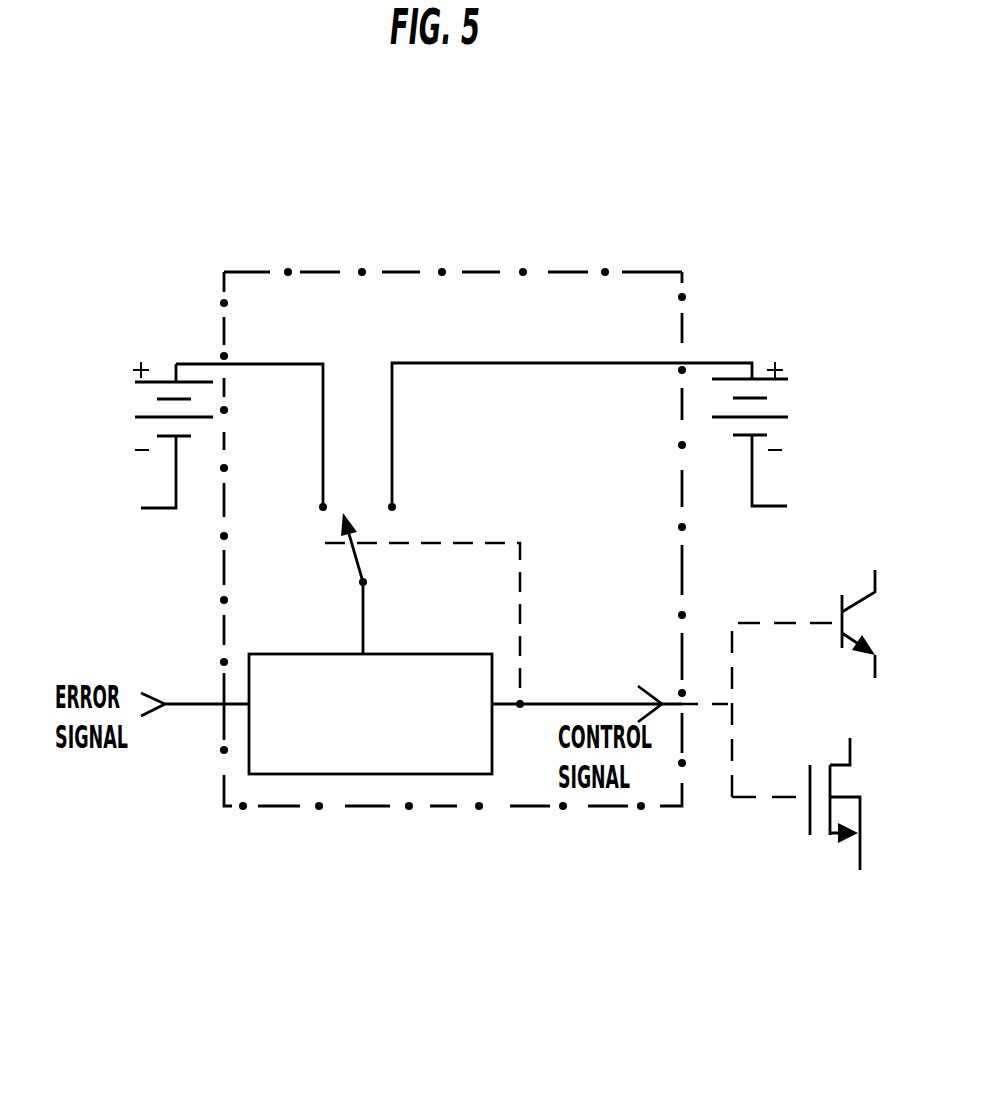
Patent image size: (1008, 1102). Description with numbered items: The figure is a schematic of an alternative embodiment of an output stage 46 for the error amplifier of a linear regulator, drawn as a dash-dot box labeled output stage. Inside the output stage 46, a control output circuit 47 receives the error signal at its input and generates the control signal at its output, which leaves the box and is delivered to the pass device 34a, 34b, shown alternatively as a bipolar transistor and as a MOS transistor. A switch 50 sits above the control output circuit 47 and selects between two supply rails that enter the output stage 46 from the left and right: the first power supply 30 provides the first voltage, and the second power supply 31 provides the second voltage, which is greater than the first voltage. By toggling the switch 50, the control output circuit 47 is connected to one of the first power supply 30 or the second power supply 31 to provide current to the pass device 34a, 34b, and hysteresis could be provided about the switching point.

The output stage 46 is at (680, 227).
The control output circuit 47 is at (448, 768).
The switch 50 is at (323, 547).
The first power supply 30 is at (793, 364).
The second power supply 31 is at (125, 355).
The pass device 34a is at (843, 577).
The pass device 34b is at (828, 850).